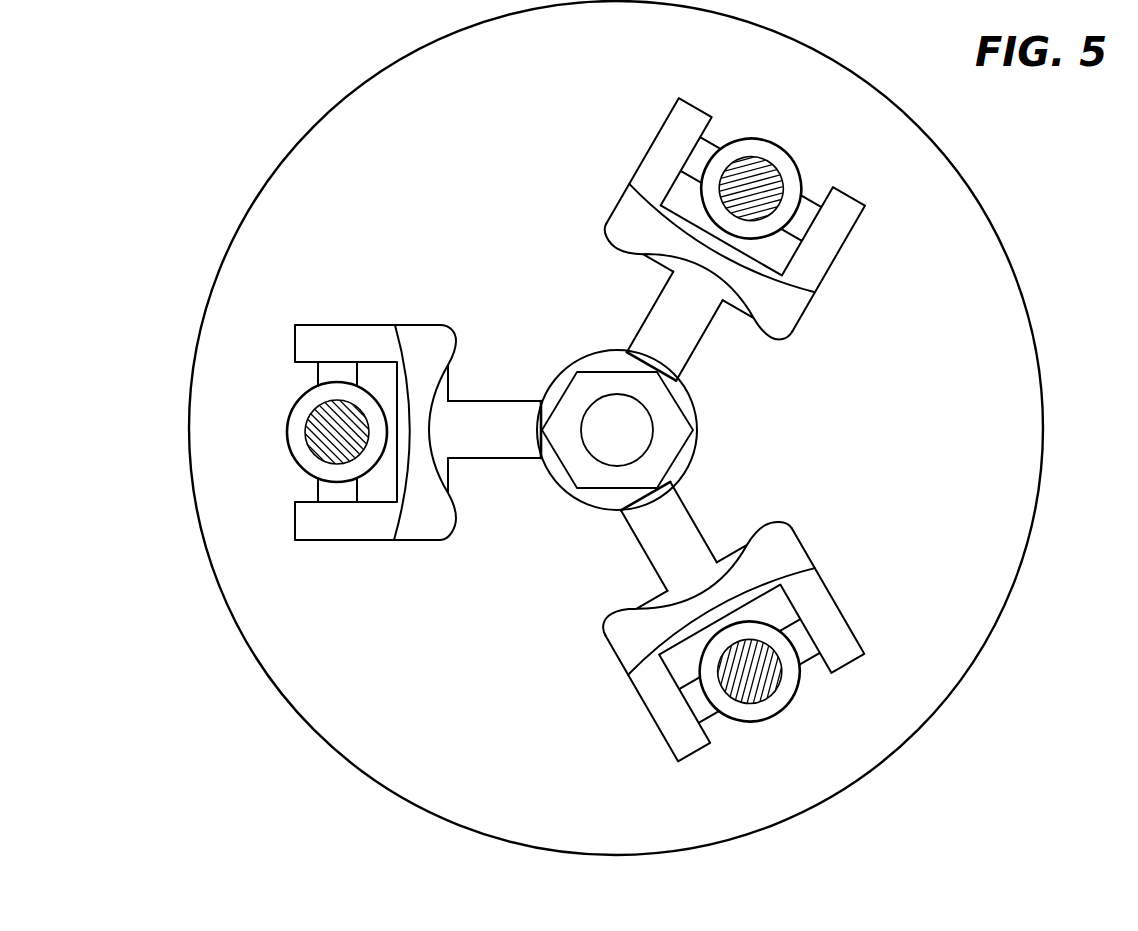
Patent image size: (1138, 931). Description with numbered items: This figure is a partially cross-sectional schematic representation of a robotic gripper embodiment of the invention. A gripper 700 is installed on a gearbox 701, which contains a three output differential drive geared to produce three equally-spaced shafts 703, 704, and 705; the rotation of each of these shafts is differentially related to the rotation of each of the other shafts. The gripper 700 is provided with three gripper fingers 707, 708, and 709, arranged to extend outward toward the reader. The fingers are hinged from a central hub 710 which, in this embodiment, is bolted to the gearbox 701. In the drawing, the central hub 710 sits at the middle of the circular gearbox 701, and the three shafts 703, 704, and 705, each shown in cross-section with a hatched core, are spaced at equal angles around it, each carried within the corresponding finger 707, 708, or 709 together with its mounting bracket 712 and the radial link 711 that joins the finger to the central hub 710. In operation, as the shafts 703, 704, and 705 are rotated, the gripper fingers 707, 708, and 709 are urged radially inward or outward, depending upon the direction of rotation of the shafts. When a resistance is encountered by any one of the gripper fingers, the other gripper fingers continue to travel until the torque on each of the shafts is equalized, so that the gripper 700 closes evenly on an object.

The gripper 700 is at (289, 99).
The gearbox 701 is at (448, 77).
The shaft 703 is at (745, 162).
The shaft 704 is at (772, 670).
The shaft 705 is at (324, 446).
The gripper finger 707 is at (776, 308).
The gripper finger 708 is at (780, 553).
The gripper finger 709 is at (412, 351).
The central hub 710 is at (590, 462).
The radial arm 711 is at (678, 542).
The bracket shaft 712 is at (804, 197).